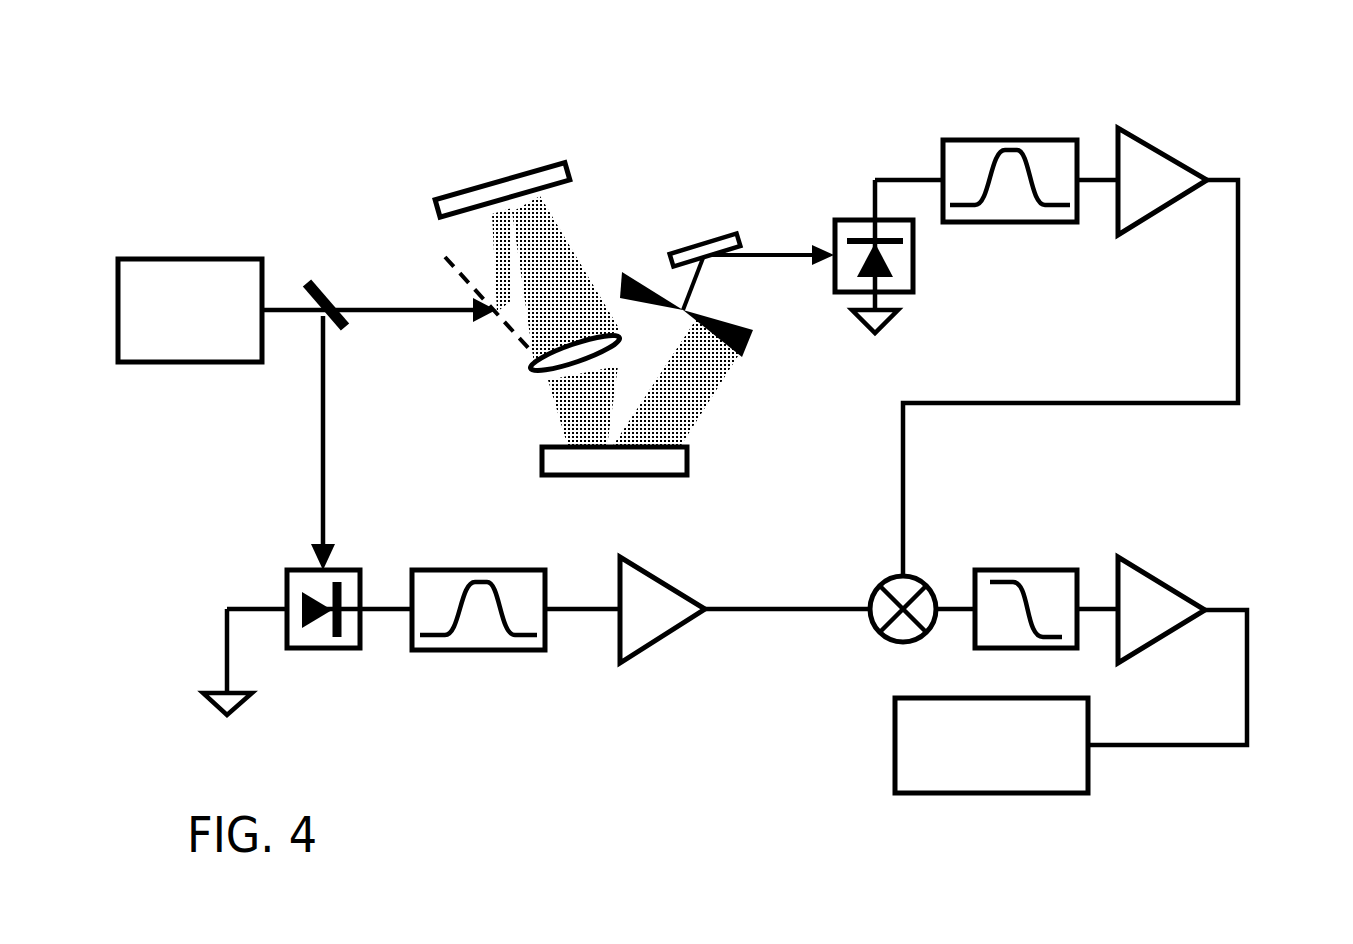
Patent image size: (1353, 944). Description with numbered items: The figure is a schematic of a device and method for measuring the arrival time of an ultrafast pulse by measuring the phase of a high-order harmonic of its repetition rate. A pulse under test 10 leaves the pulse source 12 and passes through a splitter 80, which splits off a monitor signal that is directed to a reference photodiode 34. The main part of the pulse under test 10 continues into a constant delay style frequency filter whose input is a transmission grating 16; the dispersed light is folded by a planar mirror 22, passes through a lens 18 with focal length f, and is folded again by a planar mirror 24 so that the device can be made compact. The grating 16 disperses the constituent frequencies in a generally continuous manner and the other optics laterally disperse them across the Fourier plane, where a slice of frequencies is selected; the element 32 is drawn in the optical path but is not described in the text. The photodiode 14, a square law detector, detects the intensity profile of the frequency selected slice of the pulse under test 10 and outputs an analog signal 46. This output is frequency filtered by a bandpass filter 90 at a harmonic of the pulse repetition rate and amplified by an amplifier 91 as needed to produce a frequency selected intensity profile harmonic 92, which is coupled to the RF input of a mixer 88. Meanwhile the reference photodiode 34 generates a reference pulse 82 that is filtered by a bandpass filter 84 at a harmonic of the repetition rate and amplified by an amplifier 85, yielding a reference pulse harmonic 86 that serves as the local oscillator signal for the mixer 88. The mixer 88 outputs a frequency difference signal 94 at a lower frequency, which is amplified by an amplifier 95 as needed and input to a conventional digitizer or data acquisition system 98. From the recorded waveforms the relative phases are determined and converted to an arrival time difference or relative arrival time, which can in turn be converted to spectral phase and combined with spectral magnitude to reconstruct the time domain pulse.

The pulse under test 10 is at (397, 307).
The pulse source 12 is at (202, 259).
The photodiode 14 is at (860, 220).
The transmission grating 16 is at (497, 325).
The lens 18 is at (612, 332).
The planar mirror 22 is at (493, 182).
The planar mirror 24 is at (687, 462).
The grating 32 is at (747, 343).
The reference photodiode 34 is at (337, 648).
The analog signal 46 is at (900, 180).
The splitter 80 is at (307, 287).
The reference pulse 82 is at (388, 609).
The bandpass filter 84 is at (490, 650).
The amplifier 85 is at (662, 637).
The reference pulse harmonic 86 is at (768, 609).
The mixer 88 is at (915, 583).
The bandpass filter 90 is at (1010, 140).
The amplifier 91 is at (1167, 152).
The frequency selected intensity profile harmonic 92 is at (1240, 306).
The frequency difference signal 94 is at (1028, 570).
The amplifier 95 is at (1183, 590).
The data acquisition system 98 is at (895, 760).